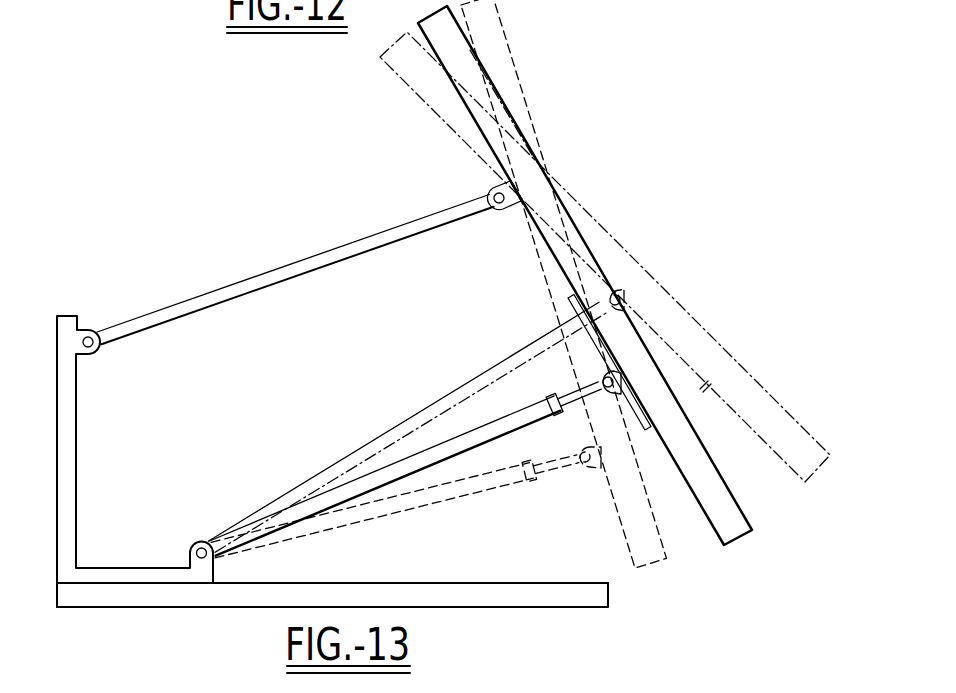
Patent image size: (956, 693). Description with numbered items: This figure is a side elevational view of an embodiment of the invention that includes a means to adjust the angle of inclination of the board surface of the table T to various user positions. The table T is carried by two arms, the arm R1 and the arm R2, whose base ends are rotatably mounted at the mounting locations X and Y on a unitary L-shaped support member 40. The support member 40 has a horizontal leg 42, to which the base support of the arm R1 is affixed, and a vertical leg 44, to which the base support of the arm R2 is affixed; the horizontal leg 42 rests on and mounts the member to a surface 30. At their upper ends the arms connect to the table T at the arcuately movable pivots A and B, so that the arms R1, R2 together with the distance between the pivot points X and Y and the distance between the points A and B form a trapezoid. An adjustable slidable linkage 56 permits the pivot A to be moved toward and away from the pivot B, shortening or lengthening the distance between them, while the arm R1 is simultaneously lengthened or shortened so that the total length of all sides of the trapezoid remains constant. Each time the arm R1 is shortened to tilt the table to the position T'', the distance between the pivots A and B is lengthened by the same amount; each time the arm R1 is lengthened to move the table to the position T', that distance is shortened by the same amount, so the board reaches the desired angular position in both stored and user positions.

The surface 30 is at (470, 583).
The L-shaped support member 40 is at (149, 590).
The horizontal leg 42 is at (205, 608).
The vertical leg 44 is at (76, 468).
The adjustable slidable linkage 56 is at (612, 369).
The arm R1 is at (450, 440).
The arm R2 is at (326, 252).
The mounting location X is at (200, 547).
The mounting location Y is at (88, 337).
The pivot A is at (617, 372).
The pivot B is at (500, 188).
The table T is at (585, 275).
The table position T' is at (519, 292).
The table position T'' is at (438, 284).